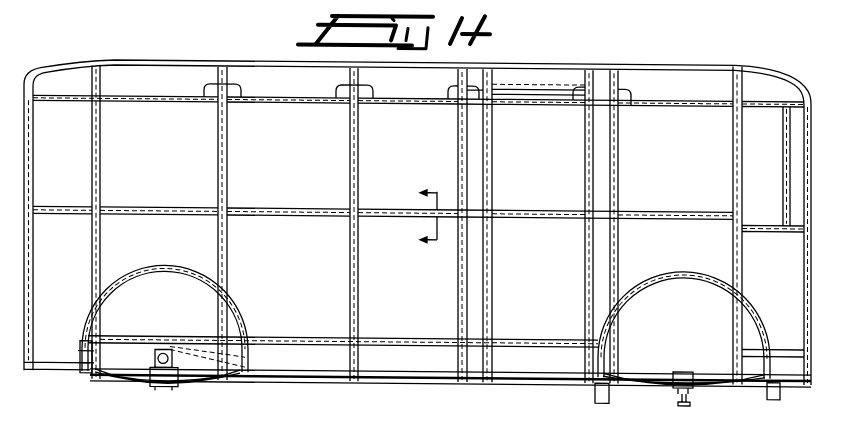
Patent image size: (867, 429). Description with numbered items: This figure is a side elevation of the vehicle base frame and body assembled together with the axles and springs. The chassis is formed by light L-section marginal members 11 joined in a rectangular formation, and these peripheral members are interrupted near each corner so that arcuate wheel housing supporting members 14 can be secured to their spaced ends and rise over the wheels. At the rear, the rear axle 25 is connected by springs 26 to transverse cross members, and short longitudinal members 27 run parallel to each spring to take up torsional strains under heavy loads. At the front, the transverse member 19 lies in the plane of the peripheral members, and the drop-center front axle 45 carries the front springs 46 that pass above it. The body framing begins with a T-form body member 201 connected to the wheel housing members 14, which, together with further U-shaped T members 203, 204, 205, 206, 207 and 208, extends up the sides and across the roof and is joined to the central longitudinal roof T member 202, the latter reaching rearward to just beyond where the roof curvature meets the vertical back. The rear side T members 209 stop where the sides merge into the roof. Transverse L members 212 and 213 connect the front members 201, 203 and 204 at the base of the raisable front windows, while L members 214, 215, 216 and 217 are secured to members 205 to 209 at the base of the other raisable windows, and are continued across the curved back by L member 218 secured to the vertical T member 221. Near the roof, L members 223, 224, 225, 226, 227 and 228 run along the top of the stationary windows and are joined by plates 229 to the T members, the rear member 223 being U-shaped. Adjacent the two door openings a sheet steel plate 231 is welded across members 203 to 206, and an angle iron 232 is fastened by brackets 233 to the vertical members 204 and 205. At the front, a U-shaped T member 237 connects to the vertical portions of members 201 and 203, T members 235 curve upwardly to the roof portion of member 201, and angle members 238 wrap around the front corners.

The marginal members 11 is at (418, 378).
The arcuate wheel housing supporting members 14 is at (170, 264).
The transverse member 19 is at (435, 217).
The rear axle 25 is at (153, 356).
The springs 26 is at (124, 377).
The short longitudinal members 27 is at (86, 329).
The front axle 45 is at (688, 391).
The front springs 46 is at (662, 374).
The body member 201 is at (742, 166).
The T member 202 is at (186, 59).
The side frame member of T form 203 is at (618, 133).
The side frame member of T form 204 is at (585, 130).
The side frame member of T form 205 is at (492, 158).
The side frame member of T form 206 is at (460, 128).
The side frame member of T form 207 is at (358, 159).
The side frame member of T form 208 is at (227, 156).
The rear side T members 209 is at (100, 157).
The transverse member 212 is at (650, 205).
The transverse member 213 is at (618, 215).
The transverse L member 214 is at (490, 213).
The transverse L member 215 is at (396, 213).
The transverse L member 216 is at (298, 213).
The transverse L member 217 is at (176, 213).
The L member 218 is at (66, 213).
The vertical T member 221 is at (33, 152).
The rear L member 223 is at (178, 99).
The L member 224 is at (310, 97).
The L member 225 is at (405, 97).
The L member 226 is at (462, 101).
The L member 227 is at (540, 99).
The L member 228 is at (602, 102).
The plates 229 is at (232, 95).
The sheet steel plate 231 is at (626, 90).
The angle iron 232 is at (525, 86).
The brackets 233 is at (488, 66).
The T members 235 is at (763, 61).
The T member 237 is at (675, 101).
The angle members 238 is at (753, 226).